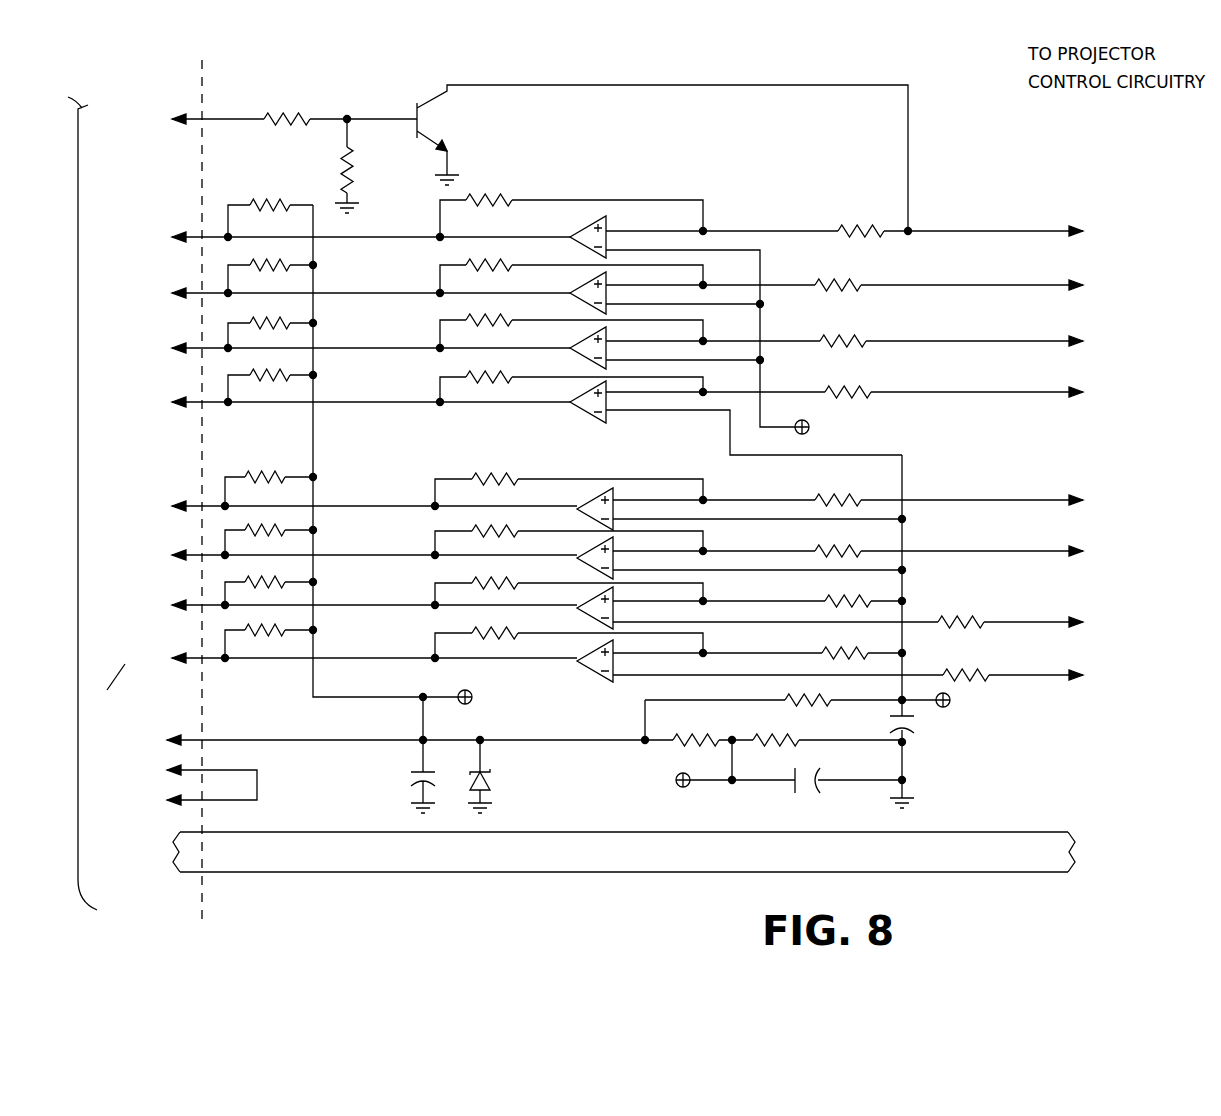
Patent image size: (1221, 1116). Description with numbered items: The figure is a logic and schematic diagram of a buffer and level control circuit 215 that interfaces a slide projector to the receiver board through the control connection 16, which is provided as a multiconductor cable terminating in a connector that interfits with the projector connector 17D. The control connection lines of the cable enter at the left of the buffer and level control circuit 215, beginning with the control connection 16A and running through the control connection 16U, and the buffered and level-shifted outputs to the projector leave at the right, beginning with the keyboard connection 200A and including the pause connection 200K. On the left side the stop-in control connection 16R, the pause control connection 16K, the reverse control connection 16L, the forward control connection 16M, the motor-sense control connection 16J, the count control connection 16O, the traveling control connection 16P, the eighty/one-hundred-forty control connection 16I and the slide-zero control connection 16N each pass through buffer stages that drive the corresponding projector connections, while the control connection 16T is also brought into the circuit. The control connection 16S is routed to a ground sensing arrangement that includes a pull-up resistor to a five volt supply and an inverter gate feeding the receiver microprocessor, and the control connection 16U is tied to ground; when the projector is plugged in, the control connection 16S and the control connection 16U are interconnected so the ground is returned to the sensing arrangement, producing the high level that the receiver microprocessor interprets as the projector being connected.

The connector 17D is at (112, 80).
The control connection 16 is at (200, 89).
The control connection 16R is at (500, 158).
The control connection 16K is at (478, 318).
The control connection 16L is at (609, 286).
The control connection 16M is at (612, 341).
The control connection 16J is at (600, 412).
The control connection 16O is at (603, 500).
The control connection 16P is at (599, 551).
The control connection 16I is at (601, 602).
The control connection 16N is at (605, 657).
The control connection 16T is at (534, 755).
The control connection 16S is at (212, 765).
The control connection 16U is at (212, 791).
The control connection 16A is at (172, 858).
The buffer and level control circuit 215 is at (760, 52).
The control connection 200K is at (995, 234).
The control connection 200A is at (1140, 854).